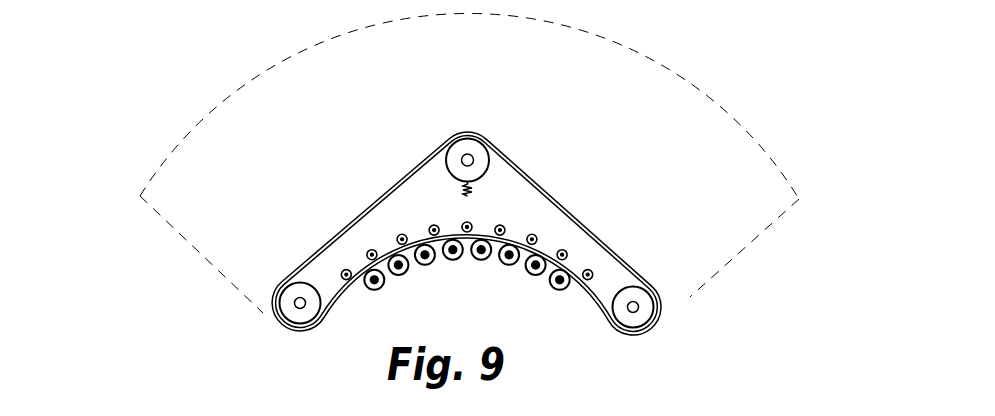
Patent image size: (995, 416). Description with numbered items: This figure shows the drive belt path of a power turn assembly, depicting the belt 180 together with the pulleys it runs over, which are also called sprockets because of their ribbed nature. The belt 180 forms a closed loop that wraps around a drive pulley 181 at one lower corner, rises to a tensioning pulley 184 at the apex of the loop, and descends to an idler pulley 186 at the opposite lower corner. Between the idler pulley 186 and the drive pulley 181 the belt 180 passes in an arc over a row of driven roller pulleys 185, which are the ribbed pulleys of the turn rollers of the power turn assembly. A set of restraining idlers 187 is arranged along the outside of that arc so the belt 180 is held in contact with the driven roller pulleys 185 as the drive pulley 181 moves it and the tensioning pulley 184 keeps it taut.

The belt 180 is at (597, 230).
The drive pulley 181 is at (730, 345).
The tensioning pulley 184 is at (495, 108).
The driven roller pulleys 185 is at (433, 258).
The idler pulley 186 is at (290, 304).
The restraining idlers 187 is at (368, 251).